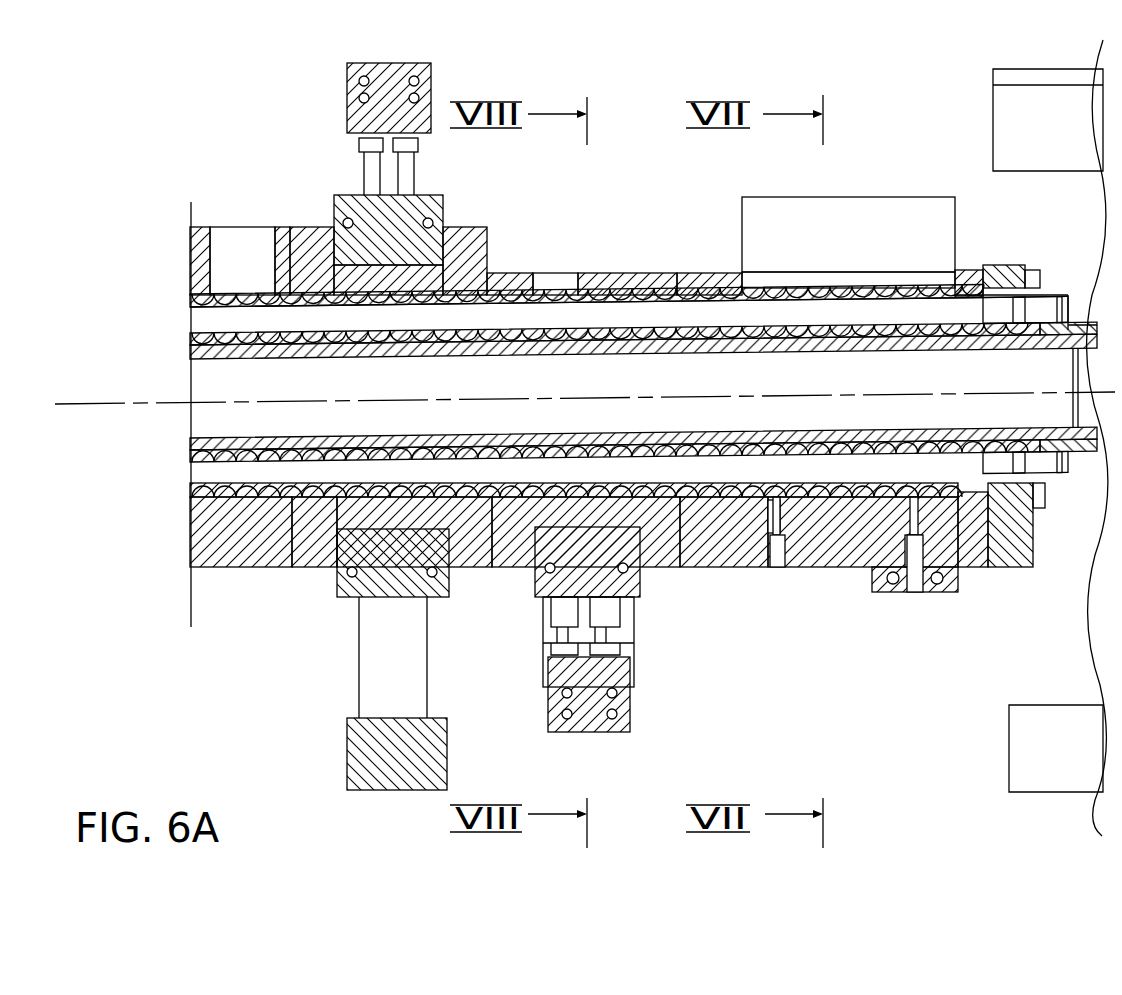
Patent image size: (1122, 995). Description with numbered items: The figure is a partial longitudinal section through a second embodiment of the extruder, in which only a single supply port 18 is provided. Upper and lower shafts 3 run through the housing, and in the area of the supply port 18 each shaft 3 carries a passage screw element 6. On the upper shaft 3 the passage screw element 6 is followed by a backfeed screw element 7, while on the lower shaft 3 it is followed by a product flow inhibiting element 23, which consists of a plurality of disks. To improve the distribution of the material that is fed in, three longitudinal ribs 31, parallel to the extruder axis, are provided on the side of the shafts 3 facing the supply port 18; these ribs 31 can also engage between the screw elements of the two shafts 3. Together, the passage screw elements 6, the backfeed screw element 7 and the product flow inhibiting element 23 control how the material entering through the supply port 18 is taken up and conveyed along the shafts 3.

The shaft 3 is at (190, 330).
The passage screw element 6 is at (908, 303).
The backfeed screw element 7 is at (790, 300).
The supply port 18 is at (886, 172).
The product flow inhibiting element 23 is at (818, 492).
The longitudinal rib 31 is at (880, 279).